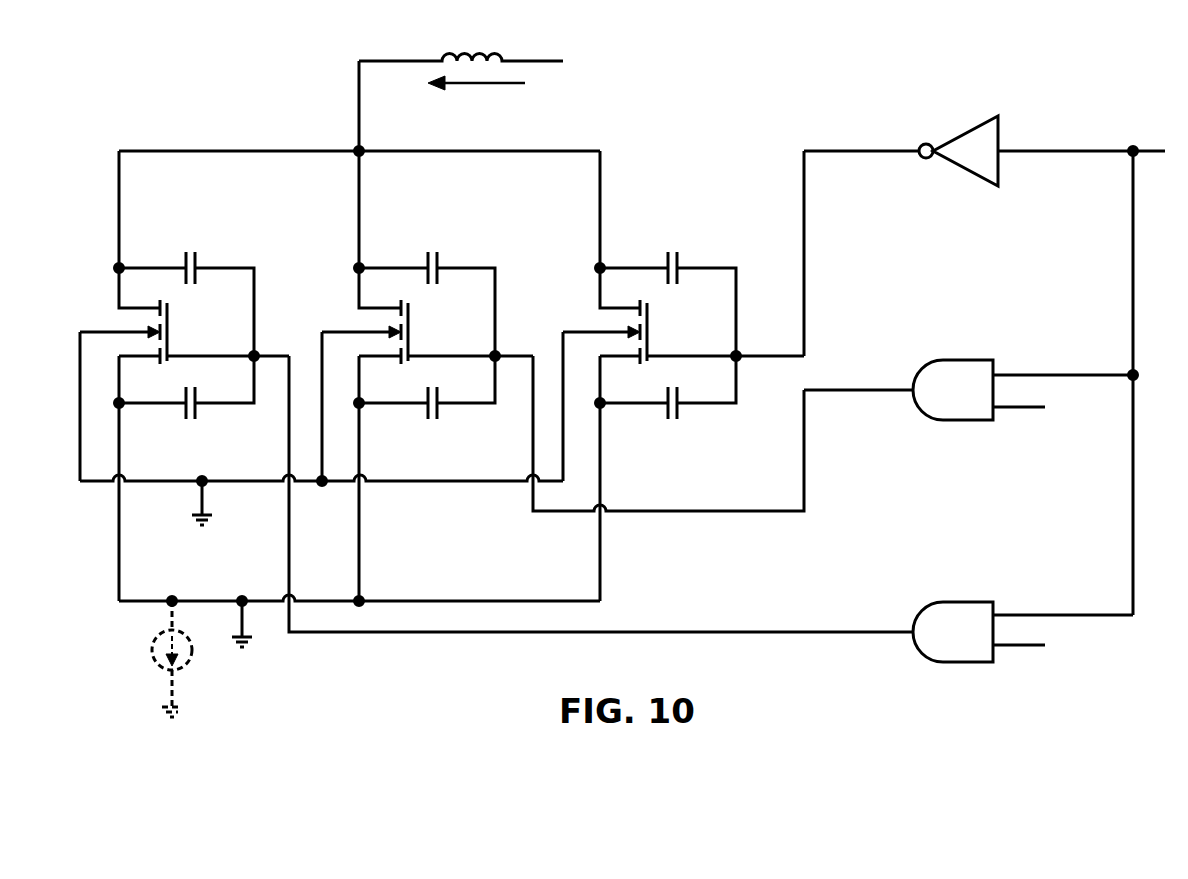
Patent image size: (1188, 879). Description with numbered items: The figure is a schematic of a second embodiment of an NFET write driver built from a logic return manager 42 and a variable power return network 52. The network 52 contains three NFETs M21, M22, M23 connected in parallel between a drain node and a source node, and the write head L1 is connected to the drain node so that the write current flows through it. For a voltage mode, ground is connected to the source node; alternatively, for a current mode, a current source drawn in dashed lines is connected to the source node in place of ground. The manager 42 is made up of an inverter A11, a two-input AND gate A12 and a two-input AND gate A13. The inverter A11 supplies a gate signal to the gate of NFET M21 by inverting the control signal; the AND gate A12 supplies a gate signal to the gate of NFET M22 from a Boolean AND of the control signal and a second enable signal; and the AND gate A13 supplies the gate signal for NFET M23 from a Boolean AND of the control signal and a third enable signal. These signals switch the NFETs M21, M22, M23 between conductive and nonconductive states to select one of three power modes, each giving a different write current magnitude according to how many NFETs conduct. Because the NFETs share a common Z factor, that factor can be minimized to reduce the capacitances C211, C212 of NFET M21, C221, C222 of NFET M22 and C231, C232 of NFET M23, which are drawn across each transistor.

The variable power return network 52 is at (246, 71).
The logic return manager 42 is at (834, 71).
The write head L1 is at (461, 46).
The NFET M23 is at (184, 390).
The NFET M22 is at (427, 390).
The NFET M21 is at (683, 390).
The capacitance C231 is at (185, 294).
The capacitance C232 is at (185, 401).
The capacitance C221 is at (425, 294).
The capacitance C222 is at (425, 401).
The capacitance C211 is at (666, 294).
The capacitance C212 is at (666, 401).
The inverter A11 is at (984, 228).
The two-input AND gate A12 is at (968, 379).
The two-input AND gate A13 is at (1023, 621).